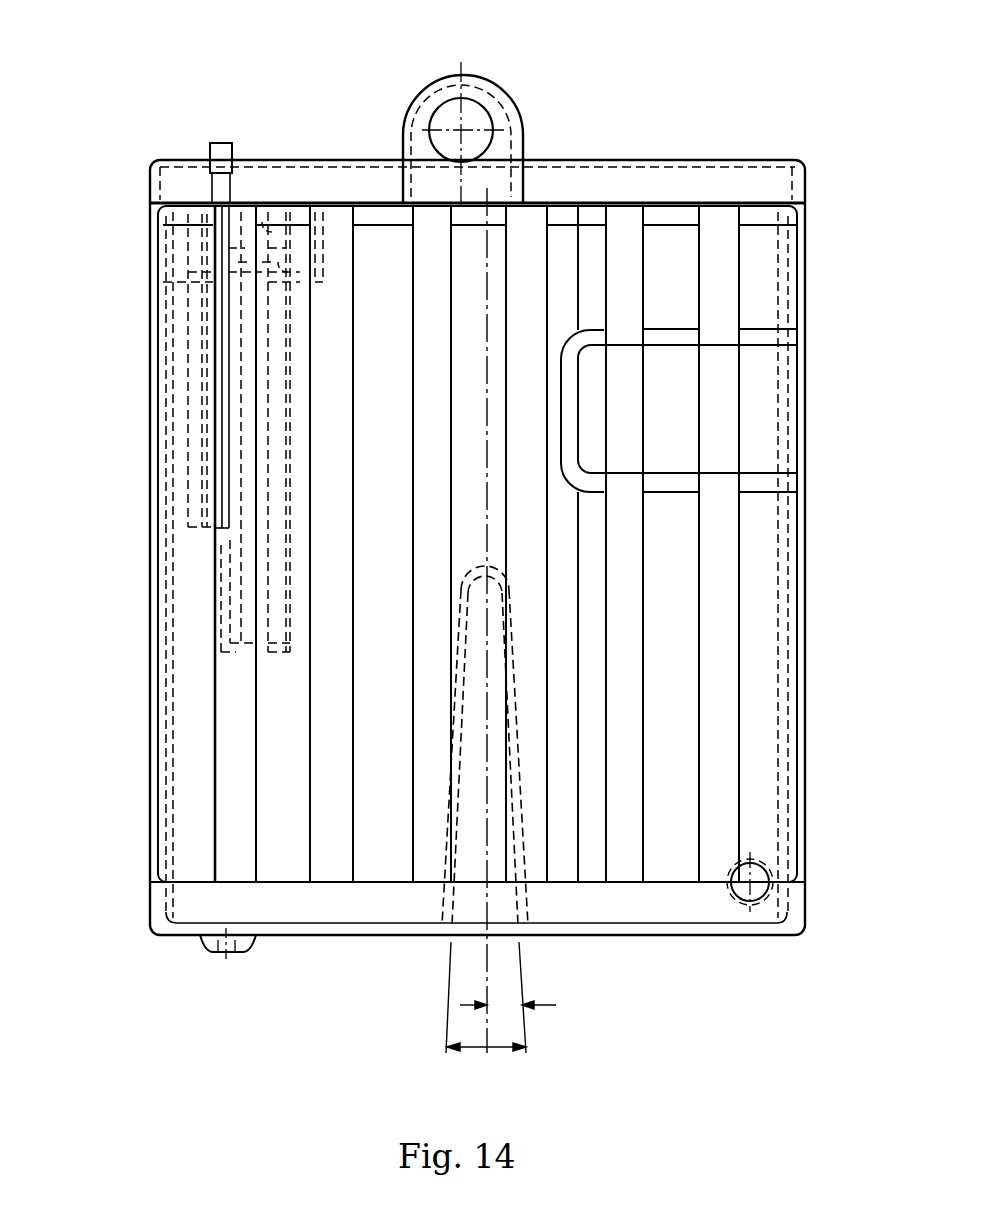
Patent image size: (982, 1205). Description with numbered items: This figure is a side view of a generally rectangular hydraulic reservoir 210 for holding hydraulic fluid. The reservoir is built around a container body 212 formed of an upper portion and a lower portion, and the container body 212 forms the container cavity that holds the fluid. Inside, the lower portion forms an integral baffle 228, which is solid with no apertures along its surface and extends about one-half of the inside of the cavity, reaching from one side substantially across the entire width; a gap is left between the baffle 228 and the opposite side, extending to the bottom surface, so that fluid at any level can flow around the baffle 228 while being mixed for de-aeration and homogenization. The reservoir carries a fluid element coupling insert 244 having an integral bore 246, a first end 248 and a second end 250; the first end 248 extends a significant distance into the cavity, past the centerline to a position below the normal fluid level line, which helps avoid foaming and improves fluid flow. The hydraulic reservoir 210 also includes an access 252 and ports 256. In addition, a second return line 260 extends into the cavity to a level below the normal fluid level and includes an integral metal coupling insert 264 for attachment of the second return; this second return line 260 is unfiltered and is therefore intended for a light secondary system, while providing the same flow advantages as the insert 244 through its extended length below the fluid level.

The hydraulic reservoir 210 is at (412, 955).
The container body 212 is at (688, 182).
The integral baffle 228 is at (476, 596).
The fluid element coupling insert 244 is at (277, 262).
The integral bore 246 is at (248, 643).
The first end 248 is at (227, 653).
The second end 250 is at (268, 244).
The access 252 is at (478, 112).
The ports 256 is at (752, 866).
The second return line 260 is at (205, 456).
The integral metal coupling insert 264 is at (216, 537).